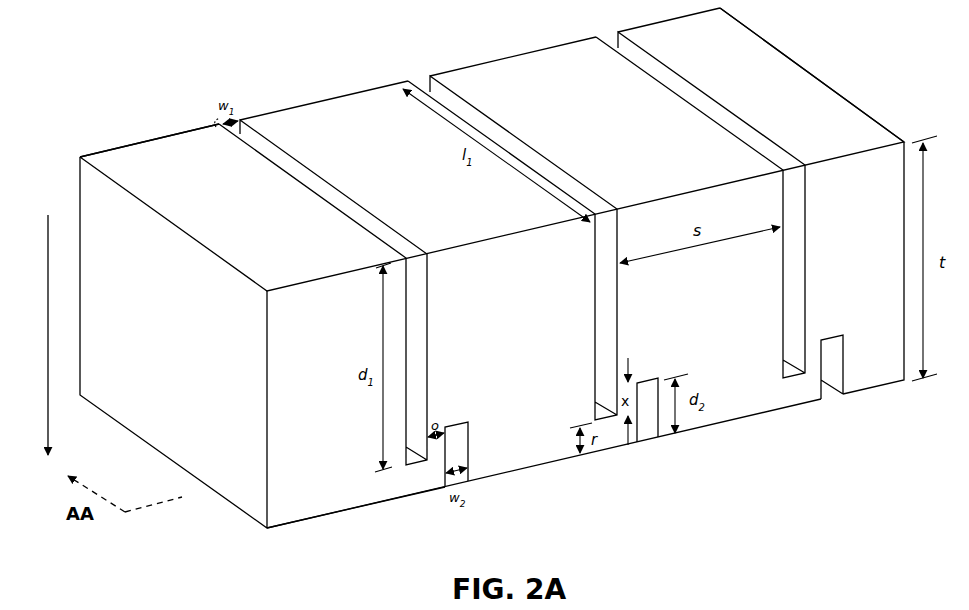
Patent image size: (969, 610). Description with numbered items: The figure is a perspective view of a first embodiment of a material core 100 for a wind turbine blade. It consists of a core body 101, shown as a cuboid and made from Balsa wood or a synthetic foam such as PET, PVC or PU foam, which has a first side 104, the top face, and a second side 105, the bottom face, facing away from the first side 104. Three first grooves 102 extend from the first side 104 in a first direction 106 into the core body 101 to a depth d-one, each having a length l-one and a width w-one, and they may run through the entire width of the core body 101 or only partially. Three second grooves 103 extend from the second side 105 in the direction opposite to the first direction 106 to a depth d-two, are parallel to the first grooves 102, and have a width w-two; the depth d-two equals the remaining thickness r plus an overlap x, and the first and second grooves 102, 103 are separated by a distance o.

The material core 100 is at (492, 268).
The core body 101 is at (846, 98).
The first grooves 102 is at (429, 343).
The second grooves 103 is at (470, 455).
The first side 104 is at (341, 115).
The second side 105 is at (334, 514).
The first direction 106 is at (51, 319).